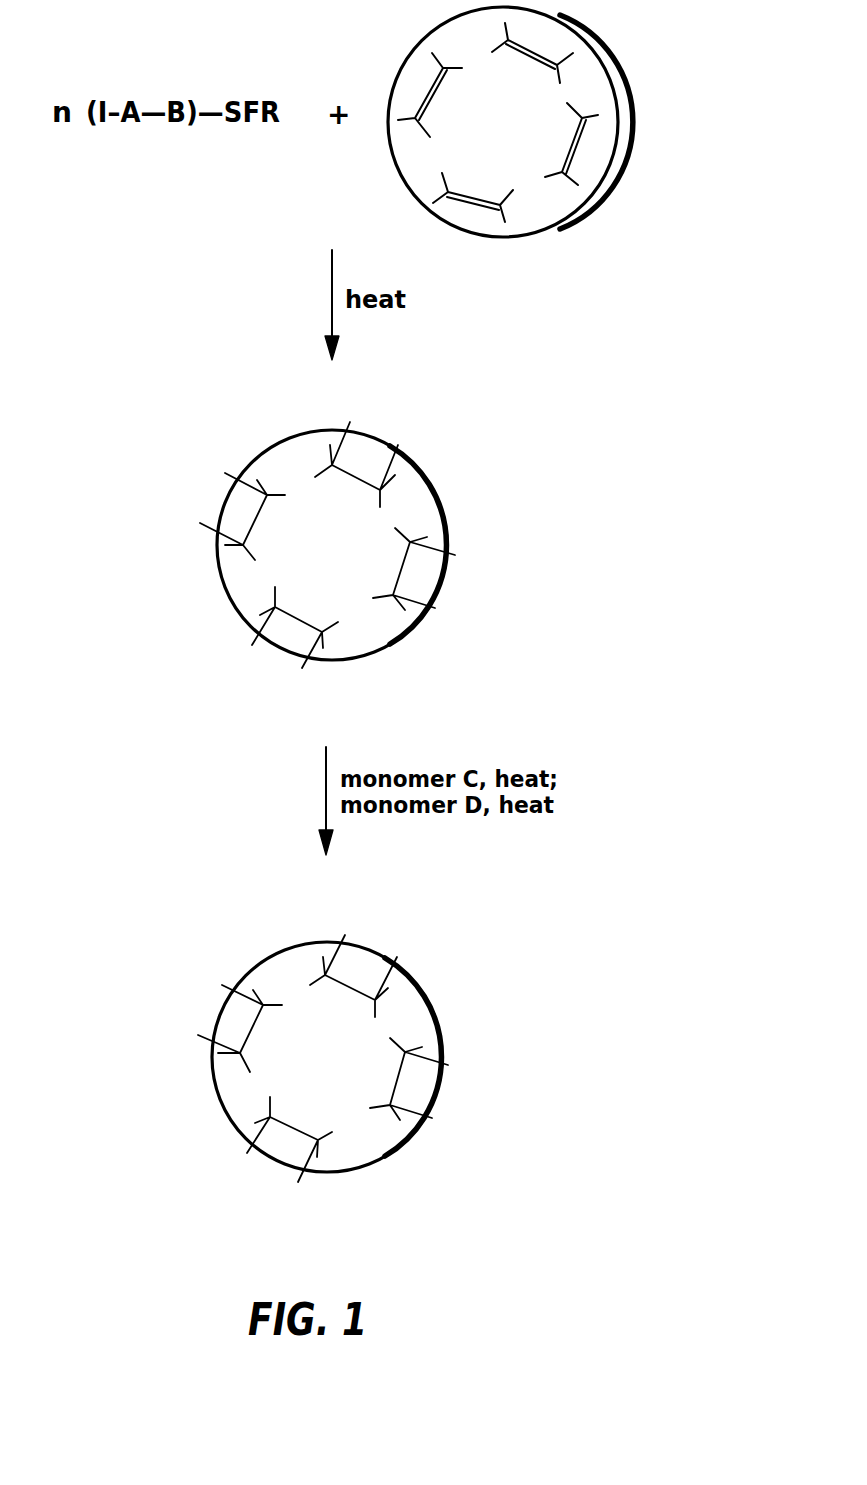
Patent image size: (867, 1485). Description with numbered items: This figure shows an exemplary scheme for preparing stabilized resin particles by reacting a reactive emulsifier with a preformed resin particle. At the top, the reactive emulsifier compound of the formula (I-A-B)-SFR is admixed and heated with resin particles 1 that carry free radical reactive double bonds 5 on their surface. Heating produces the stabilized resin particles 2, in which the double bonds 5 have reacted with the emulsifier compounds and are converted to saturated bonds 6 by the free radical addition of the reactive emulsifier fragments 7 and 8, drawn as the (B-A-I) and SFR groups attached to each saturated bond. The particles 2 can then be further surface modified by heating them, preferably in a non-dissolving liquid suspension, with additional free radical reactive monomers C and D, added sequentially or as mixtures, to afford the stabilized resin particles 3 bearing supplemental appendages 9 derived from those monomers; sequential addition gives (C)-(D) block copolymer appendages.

The resin particles 1 is at (602, 62).
The free radical reactive double bonds 5 is at (598, 148).
The stabilized resin particles 2 is at (425, 483).
The saturated bonds 6 is at (392, 620).
The reactive emulsifier fragment 7 is at (529, 592).
The reactive emulsifier fragment 8 is at (490, 540).
The stabilized resin particles with supplemental appendages 3 is at (432, 1017).
The supplemental appendages 9 is at (574, 1044).